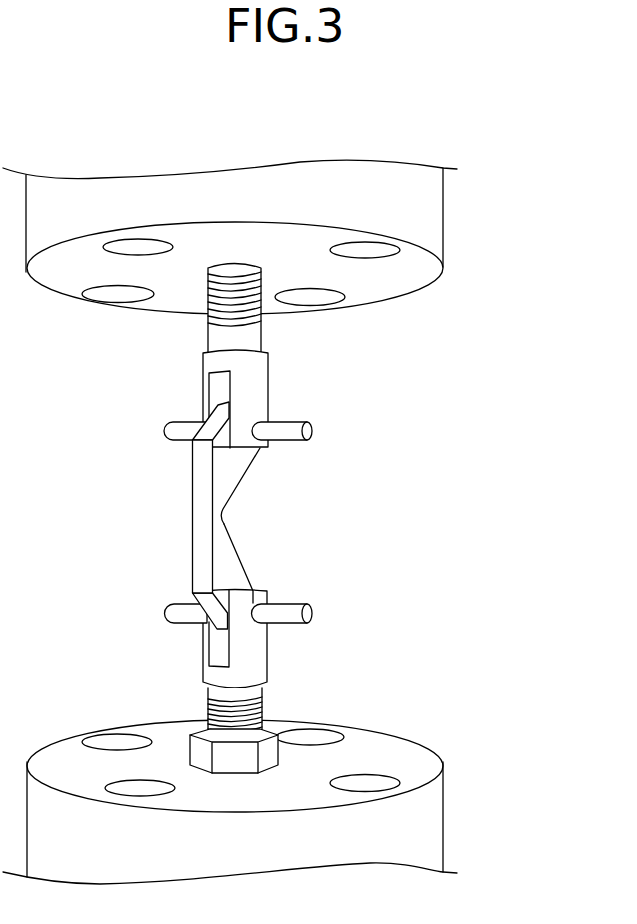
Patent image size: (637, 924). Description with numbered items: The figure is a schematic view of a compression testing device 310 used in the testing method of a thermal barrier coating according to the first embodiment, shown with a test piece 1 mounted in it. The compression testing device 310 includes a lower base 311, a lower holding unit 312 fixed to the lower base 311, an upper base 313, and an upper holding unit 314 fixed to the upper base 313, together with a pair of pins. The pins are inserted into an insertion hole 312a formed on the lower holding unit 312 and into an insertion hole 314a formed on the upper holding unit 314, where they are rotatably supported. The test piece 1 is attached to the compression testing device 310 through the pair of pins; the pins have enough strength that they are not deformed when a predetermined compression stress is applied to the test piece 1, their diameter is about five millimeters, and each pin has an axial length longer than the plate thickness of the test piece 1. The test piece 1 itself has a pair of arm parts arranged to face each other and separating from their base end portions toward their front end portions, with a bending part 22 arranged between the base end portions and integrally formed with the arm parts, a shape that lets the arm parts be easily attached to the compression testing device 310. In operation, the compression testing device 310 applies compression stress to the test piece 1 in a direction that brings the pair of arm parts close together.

The test piece 1 is at (171, 484).
The bending part 22 is at (218, 523).
The compression testing device 310 is at (499, 169).
The lower base 311 is at (427, 823).
The lower holding unit 312 is at (260, 659).
The insertion hole 312a is at (253, 593).
The upper base 313 is at (427, 203).
The upper holding unit 314 is at (258, 368).
The insertion hole 314a is at (255, 420).